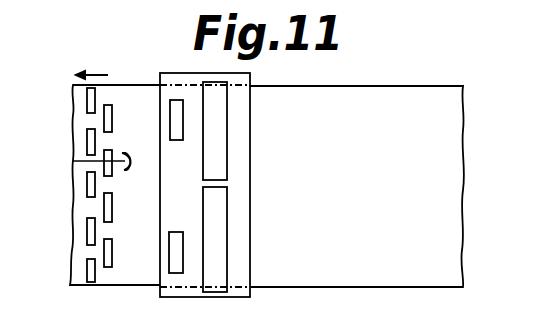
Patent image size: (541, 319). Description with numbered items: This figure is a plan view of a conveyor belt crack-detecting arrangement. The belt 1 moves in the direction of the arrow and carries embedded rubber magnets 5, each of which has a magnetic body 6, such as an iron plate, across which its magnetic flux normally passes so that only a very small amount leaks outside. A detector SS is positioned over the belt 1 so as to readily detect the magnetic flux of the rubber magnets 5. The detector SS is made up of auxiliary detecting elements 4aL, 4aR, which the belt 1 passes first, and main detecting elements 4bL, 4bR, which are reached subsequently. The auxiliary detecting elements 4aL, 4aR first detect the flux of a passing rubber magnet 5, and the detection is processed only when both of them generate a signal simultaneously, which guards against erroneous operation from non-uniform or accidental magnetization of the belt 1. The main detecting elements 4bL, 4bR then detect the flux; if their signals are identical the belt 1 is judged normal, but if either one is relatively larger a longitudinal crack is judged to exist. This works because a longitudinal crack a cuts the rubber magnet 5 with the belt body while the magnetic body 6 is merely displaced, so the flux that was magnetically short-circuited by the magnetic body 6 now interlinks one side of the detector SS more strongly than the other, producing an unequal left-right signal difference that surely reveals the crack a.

The belt 1 is at (340, 87).
The detector SS is at (234, 73).
The auxiliary detecting element 4aL is at (176, 128).
The auxiliary detecting element 4aR is at (176, 257).
The main detecting element 4bL is at (220, 118).
The main detecting element 4bR is at (220, 251).
The rubber magnet 5 is at (108, 176).
The magnetic body 6 is at (133, 158).
The longitudinal crack a is at (73, 161).